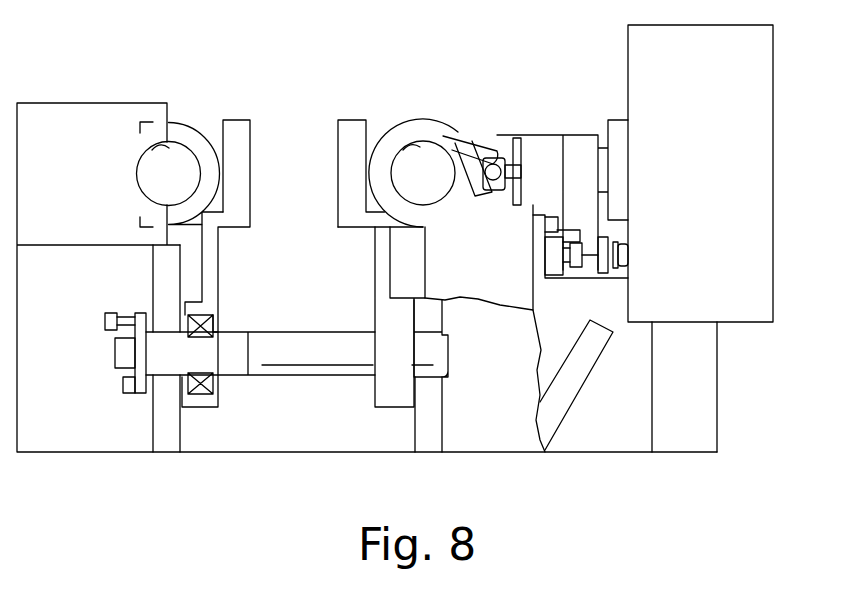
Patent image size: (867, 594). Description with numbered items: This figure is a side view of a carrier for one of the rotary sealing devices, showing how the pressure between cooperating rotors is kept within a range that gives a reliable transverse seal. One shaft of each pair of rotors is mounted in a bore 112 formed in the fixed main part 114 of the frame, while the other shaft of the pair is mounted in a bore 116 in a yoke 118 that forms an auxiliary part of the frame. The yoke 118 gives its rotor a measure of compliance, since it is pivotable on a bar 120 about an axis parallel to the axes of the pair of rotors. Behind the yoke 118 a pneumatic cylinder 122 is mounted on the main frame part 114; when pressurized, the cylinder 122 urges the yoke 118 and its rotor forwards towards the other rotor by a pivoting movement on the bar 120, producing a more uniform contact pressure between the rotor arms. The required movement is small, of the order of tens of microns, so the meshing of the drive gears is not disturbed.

The bore 112 is at (169, 147).
The fixed main part of the frame 114 is at (80, 425).
The bore 116 is at (435, 143).
The yoke 118 is at (240, 147).
The bar 120 is at (312, 352).
The pneumatic cylinder 122 is at (737, 192).